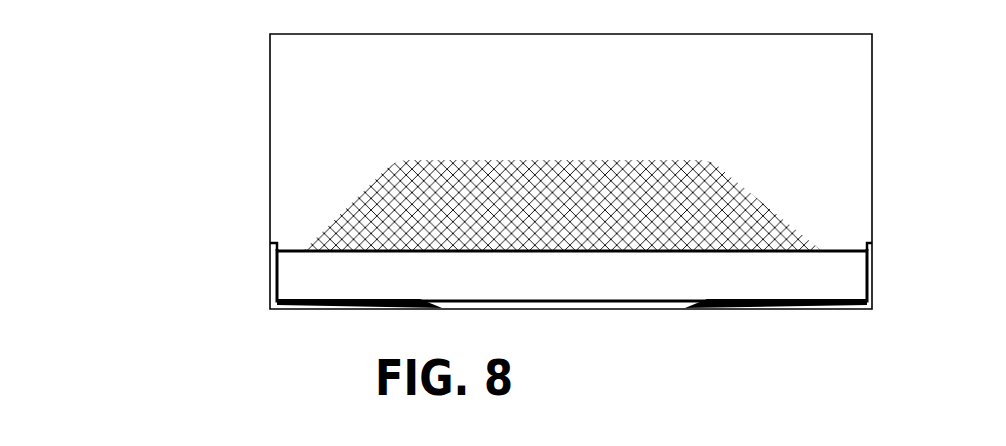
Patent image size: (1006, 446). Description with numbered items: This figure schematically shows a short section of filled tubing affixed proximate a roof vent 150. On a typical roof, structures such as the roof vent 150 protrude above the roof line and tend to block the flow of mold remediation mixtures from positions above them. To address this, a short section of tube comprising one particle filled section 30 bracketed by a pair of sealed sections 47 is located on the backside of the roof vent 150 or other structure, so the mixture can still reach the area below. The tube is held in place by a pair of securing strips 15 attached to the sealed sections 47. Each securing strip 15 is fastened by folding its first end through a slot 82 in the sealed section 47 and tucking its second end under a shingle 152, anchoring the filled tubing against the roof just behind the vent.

The roof vent 150 is at (267, 90).
The securing strip 15 is at (268, 281).
The slot 82 is at (272, 248).
The sealed section 47 is at (833, 251).
The particle filled section 30 is at (468, 250).
The shingle 152 is at (572, 275).